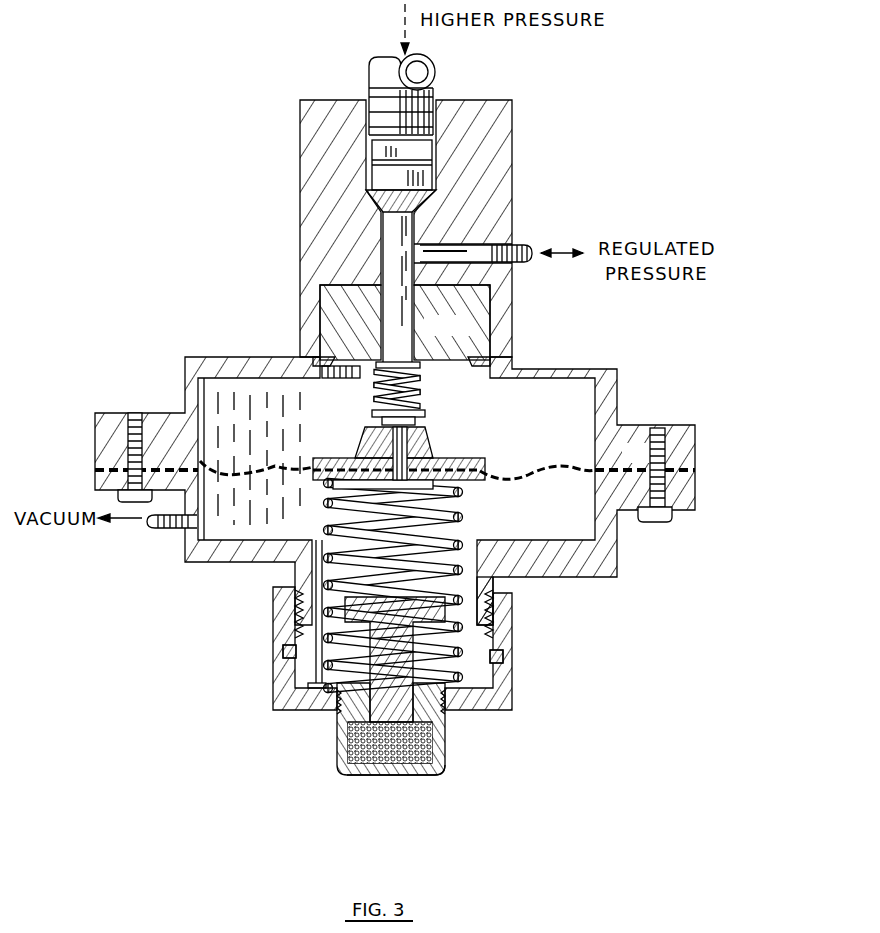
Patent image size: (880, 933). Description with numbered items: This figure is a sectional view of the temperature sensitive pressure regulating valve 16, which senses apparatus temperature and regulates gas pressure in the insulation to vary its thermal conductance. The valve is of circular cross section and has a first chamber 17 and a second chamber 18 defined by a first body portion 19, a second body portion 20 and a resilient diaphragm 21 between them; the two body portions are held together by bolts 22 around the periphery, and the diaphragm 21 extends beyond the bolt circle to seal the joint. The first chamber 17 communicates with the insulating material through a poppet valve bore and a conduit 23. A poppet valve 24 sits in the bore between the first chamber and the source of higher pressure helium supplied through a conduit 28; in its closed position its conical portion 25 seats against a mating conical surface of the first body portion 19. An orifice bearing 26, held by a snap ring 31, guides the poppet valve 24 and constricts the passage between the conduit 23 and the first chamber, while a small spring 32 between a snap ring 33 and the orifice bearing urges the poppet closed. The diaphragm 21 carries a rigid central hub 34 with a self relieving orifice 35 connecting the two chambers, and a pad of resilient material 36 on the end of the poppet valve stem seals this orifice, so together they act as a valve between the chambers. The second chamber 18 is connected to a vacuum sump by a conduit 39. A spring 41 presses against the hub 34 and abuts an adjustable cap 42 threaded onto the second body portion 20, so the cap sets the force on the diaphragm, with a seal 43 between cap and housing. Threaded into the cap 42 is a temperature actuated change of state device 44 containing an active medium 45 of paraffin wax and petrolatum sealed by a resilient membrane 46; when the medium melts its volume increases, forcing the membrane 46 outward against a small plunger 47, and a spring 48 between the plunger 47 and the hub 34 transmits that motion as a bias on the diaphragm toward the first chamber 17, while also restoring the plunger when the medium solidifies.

The temperature sensitive pressure regulating valve 16 is at (298, 201).
The first chamber 17 is at (558, 426).
The second chamber 18 is at (558, 528).
The first body portion 19 is at (641, 453).
The second body portion 20 is at (680, 487).
The resilient diaphragm 21 is at (522, 468).
The bolts 22 is at (118, 497).
The conduit 23 is at (513, 247).
The poppet valve 24 is at (410, 351).
The conical portion 25 is at (428, 203).
The orifice bearing 26 is at (405, 322).
The conduit 28 is at (430, 72).
The snap ring 31 is at (480, 382).
The small spring 32 is at (374, 390).
The snap ring 33 is at (416, 413).
The rigid central hub 34 is at (462, 462).
The self relieving orifice 35 is at (386, 440).
The pad of resilient material 36 is at (420, 428).
The conduit 39 is at (162, 527).
The spring 41 is at (413, 586).
The adjustable cap 42 is at (512, 692).
The seal 43 is at (502, 655).
The temperature actuated change of state device 44 is at (444, 768).
The active medium 45 is at (398, 764).
The resilient membrane 46 is at (340, 762).
The plunger 47 is at (350, 700).
The spring 48 is at (437, 517).